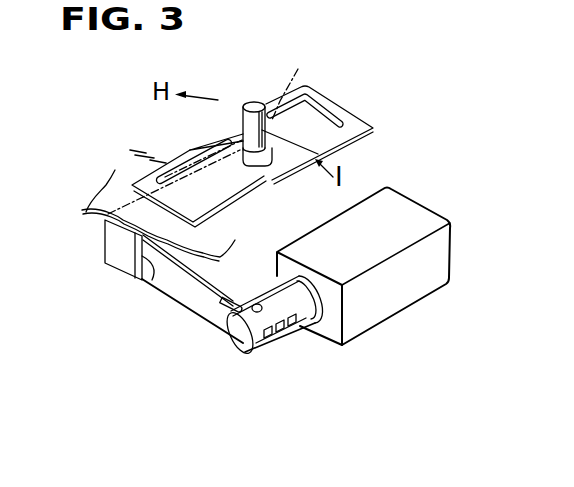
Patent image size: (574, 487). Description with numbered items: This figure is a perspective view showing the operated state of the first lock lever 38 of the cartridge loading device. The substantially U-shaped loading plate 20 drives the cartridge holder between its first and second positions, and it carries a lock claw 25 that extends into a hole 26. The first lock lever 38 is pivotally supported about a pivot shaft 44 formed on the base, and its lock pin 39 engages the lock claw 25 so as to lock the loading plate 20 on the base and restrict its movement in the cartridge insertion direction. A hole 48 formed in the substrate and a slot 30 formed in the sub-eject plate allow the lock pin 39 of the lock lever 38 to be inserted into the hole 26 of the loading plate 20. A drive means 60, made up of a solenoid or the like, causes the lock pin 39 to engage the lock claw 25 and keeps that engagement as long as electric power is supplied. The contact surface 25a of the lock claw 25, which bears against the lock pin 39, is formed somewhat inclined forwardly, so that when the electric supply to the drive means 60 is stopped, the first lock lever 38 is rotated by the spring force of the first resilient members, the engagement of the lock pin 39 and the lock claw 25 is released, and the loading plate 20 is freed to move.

The loading plate 20 is at (98, 206).
The lock claw 25 is at (241, 130).
The contact surface 25a is at (263, 168).
The hole 26 is at (315, 128).
The slot 30 is at (358, 114).
The first lock lever 38 is at (118, 262).
The lock pin 39 is at (254, 104).
The pivot shaft 44 is at (153, 281).
The hole 48 is at (297, 79).
The drive means 60 is at (442, 260).